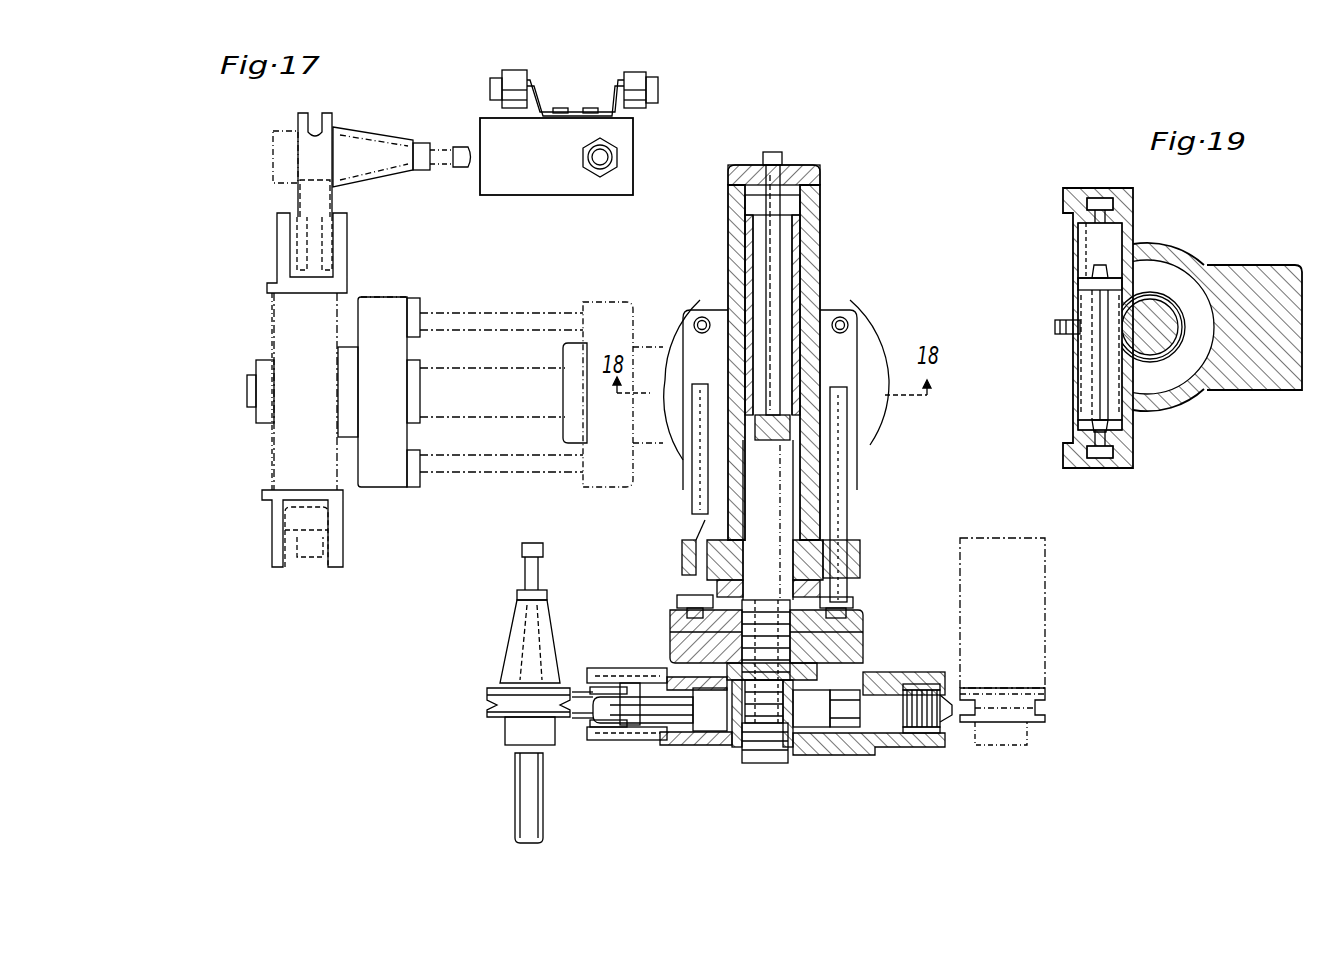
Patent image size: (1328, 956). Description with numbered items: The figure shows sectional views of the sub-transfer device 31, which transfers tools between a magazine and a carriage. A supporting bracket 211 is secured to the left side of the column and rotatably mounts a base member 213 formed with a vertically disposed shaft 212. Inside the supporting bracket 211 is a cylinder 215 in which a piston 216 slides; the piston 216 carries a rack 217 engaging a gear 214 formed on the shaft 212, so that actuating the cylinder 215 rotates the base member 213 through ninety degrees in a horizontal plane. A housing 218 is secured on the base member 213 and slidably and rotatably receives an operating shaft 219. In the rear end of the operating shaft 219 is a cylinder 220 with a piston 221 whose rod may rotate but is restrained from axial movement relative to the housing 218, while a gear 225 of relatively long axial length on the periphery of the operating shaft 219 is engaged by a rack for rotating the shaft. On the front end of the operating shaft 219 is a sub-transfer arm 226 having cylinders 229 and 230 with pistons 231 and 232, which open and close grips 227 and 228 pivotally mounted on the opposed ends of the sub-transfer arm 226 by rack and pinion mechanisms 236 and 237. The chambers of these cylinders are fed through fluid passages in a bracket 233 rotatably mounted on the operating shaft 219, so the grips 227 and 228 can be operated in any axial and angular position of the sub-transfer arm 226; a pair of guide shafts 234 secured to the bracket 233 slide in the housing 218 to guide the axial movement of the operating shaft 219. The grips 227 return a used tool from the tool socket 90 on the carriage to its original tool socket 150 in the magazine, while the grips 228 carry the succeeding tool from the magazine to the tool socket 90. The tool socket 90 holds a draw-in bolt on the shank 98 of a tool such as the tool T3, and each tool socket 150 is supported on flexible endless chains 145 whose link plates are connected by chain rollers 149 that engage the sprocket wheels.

In FIG. 17, the chain roller 149 is at (512, 78).
In FIG. 17, the flexible endless chain 145 is at (490, 92).
In FIG. 17, the tool socket 150 is at (565, 188).
In FIG. 17, the sub-transfer arm 226 is at (272, 338).
In FIG. 17, the housing 218 is at (585, 303).
In FIG. 17, the cylinder 220 is at (745, 290).
In FIG. 17, the gear 225 is at (810, 280).
In FIG. 17, the operating shaft 219 is at (482, 412).
In FIG. 17, the base member 213 is at (880, 425).
In FIG. 17, the piston 221 is at (770, 430).
In FIG. 17, the guide shaft 234 is at (692, 512).
In FIG. 17, the sub-transfer device 31 is at (672, 552).
In FIG. 17, the shank 98 is at (510, 640).
In FIG. 17, the grip 228 is at (646, 677).
In FIG. 17, the cylinder 230 is at (724, 601).
In FIG. 17, the bracket 233 is at (858, 635).
In FIG. 17, the grip 227 is at (940, 672).
In FIG. 17, the tool socket 90 is at (1046, 612).
In FIG. 17, the rack and pinion mechanism 237 is at (656, 732).
In FIG. 17, the piston 232 is at (725, 758).
In FIG. 17, the cylinder 229 is at (812, 740).
In FIG. 17, the piston 231 is at (850, 752).
In FIG. 17, the rack and pinion mechanism 236 is at (940, 752).
In FIG. 17, the tool T3 is at (515, 790).
In FIG. 19, the cylinder 215 is at (1085, 252).
In FIG. 19, the gear 214 is at (1175, 262).
In FIG. 19, the supporting bracket 211 is at (1274, 250).
In FIG. 19, the shaft 212 is at (1190, 345).
In FIG. 19, the piston 216 is at (1088, 375).
In FIG. 19, the rack 217 is at (1160, 408).